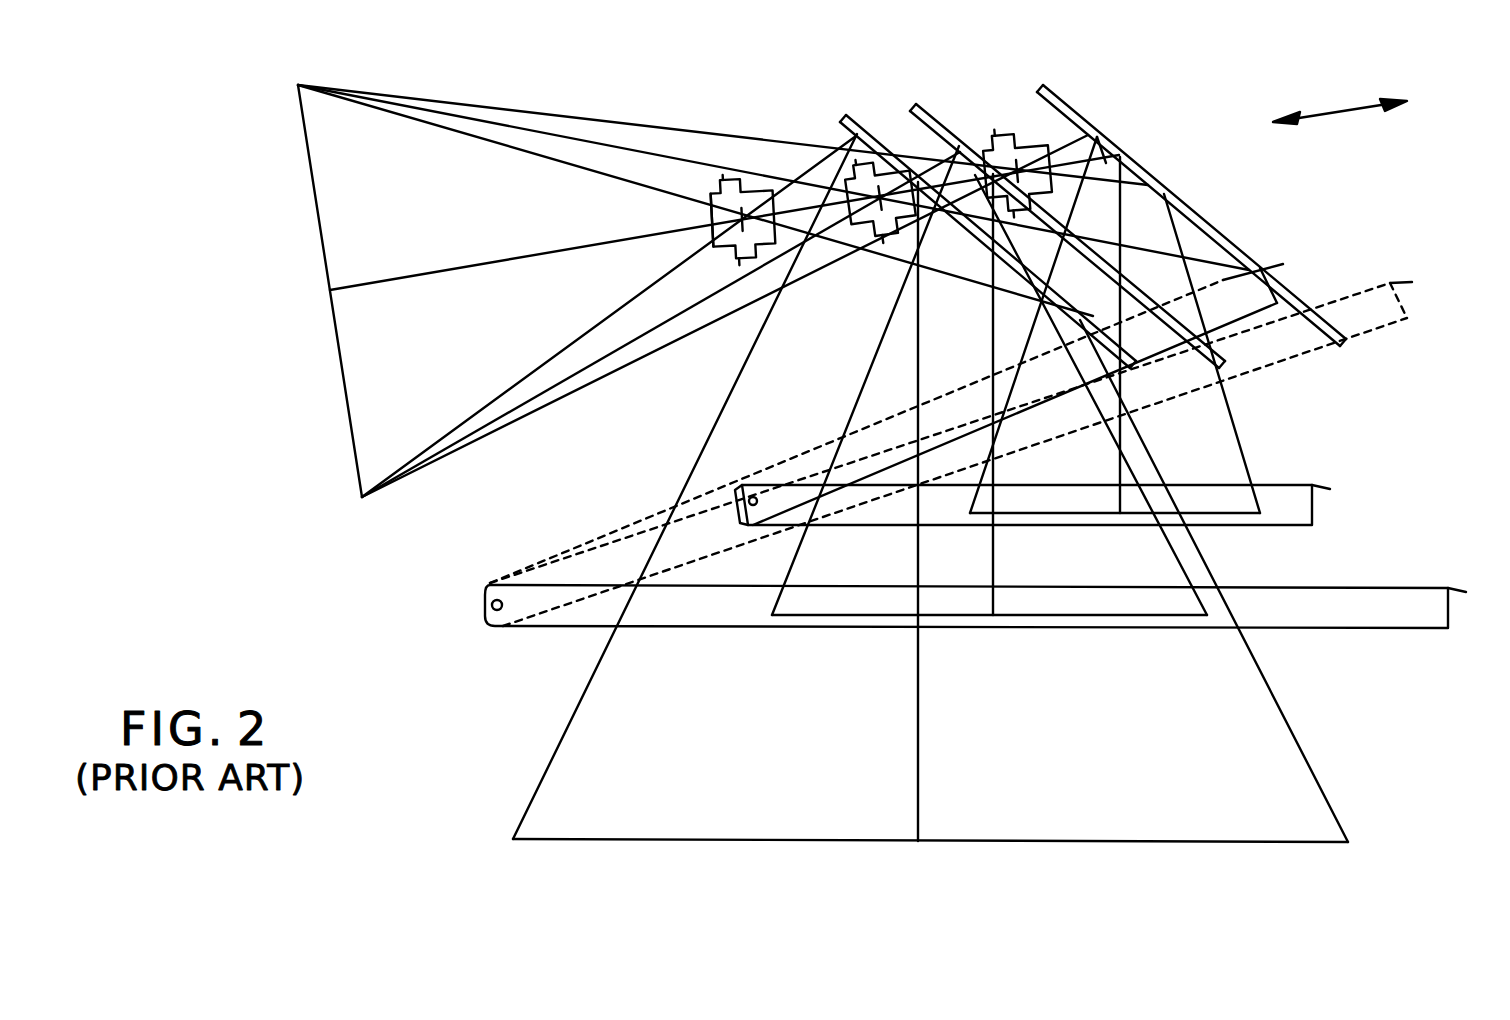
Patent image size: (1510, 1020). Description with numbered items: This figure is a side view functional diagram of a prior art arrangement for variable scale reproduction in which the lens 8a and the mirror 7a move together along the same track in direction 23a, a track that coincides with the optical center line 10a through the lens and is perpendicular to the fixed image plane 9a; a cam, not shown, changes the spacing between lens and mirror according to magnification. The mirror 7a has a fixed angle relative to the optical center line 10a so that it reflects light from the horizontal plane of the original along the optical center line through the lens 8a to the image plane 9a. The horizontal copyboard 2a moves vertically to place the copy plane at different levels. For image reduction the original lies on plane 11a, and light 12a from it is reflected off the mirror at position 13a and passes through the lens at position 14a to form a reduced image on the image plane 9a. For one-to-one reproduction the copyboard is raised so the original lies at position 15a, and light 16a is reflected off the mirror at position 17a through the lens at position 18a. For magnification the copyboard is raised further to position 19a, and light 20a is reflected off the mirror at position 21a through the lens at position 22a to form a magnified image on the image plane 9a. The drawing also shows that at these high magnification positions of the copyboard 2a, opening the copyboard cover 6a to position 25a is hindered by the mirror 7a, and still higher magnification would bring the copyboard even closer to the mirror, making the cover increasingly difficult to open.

The copyboard 2a is at (1337, 600).
The copyboard cover 6a is at (1386, 318).
The mirror 7a is at (1060, 96).
The lens 8a is at (746, 203).
The image plane 9a is at (312, 192).
The optical center line 10a is at (404, 283).
The plane for image reduction 11a is at (762, 841).
The light from the original for reduction 12a is at (574, 703).
The mirror position for reduction 13a is at (858, 95).
The lens position for reduction 14a is at (710, 202).
The plane for one-to-one reproduction 15a is at (1100, 618).
The light from the original for one-to-one reproduction 16a is at (791, 568).
The mirror position for one-to-one reproduction 17a is at (940, 126).
The lens position for one-to-one reproduction 18a is at (866, 242).
The plane for image magnification 19a is at (1222, 515).
The light from the original for magnification 20a is at (985, 473).
The mirror position for magnification 21a is at (1110, 141).
The lens position for magnification 22a is at (1014, 135).
The direction of movement 23a is at (1343, 112).
The open position of copyboard cover 25a is at (1231, 280).